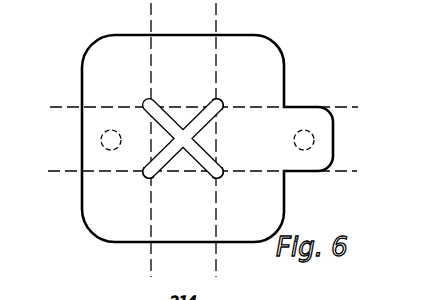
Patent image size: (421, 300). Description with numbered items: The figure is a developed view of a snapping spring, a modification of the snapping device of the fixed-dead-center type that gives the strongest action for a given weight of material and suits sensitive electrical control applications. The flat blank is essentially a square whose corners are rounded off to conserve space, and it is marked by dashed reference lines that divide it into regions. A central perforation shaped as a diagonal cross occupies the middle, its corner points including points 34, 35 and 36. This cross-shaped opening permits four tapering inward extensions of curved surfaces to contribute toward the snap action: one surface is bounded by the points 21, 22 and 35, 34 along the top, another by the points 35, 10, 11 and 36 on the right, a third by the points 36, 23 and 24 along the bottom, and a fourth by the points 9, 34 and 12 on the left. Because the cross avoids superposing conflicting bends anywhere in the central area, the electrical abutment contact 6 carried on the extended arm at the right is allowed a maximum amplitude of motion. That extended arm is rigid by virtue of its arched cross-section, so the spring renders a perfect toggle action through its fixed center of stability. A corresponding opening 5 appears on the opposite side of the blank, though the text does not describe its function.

The hole 5 is at (102, 135).
The electrical abutment contact 6 is at (313, 139).
The corner point of curved surface 9 is at (133, 97).
The corner point of curved surface 10 is at (287, 99).
The corner point of curved surface 11 is at (286, 183).
The corner point of curved surface 12 is at (132, 183).
The corner point of curved surface 21 is at (139, 71).
The corner point of curved surface 22 is at (226, 71).
The corner point of curved surface 23 is at (226, 208).
The corner point of curved surface 24 is at (137, 208).
The corner of central perforation 34 is at (167, 129).
The corner of central perforation 35 is at (226, 97).
The corner of central perforation 36 is at (177, 181).